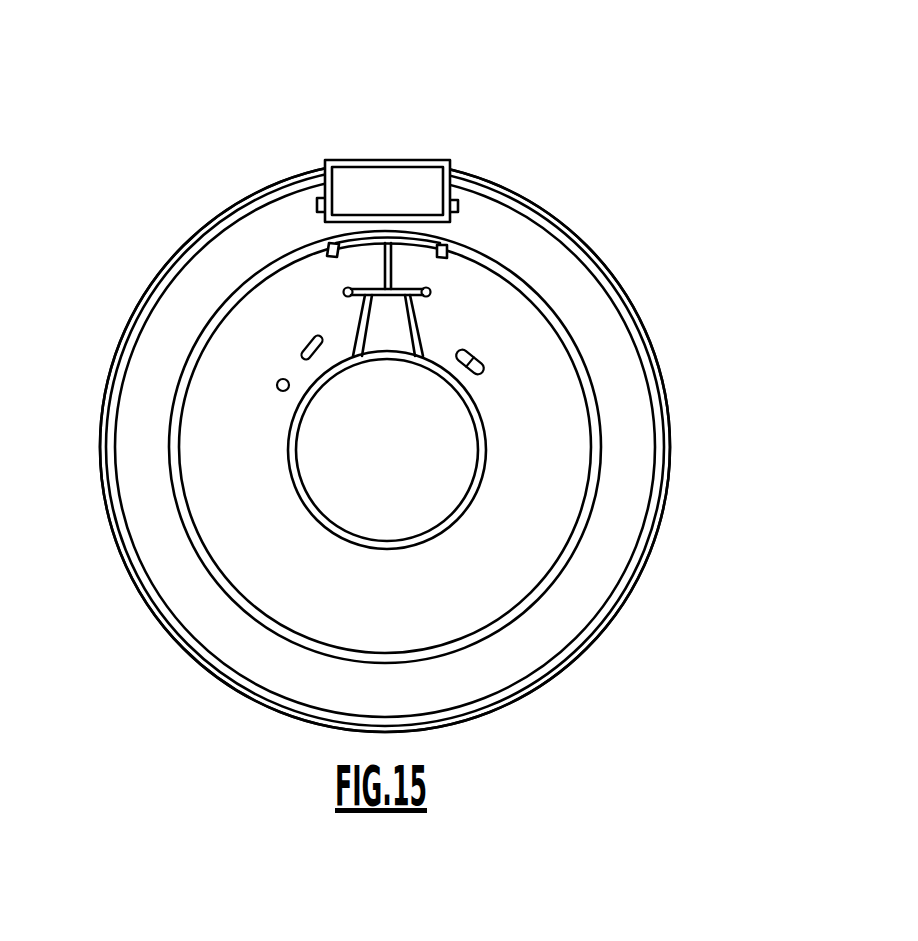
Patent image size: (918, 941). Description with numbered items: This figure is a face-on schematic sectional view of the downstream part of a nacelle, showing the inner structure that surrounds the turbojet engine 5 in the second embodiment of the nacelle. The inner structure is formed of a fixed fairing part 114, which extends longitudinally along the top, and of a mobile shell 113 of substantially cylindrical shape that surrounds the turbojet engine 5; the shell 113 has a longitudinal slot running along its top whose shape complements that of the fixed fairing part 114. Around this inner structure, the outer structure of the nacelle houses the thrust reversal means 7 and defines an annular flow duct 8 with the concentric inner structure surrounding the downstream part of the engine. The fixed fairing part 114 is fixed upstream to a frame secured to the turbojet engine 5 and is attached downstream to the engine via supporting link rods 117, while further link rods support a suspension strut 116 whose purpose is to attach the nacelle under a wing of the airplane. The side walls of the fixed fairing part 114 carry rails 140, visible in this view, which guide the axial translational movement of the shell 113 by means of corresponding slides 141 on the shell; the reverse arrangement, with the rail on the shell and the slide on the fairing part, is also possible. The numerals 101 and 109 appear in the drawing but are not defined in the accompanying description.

The turbojet engine 5 is at (333, 467).
The thrust reversal means 7 is at (150, 292).
The annular flow duct 8 is at (155, 370).
The device assembly 101 is at (628, 148).
The inner ring 109 is at (586, 333).
The mobile shell 113 is at (600, 467).
The fixed fairing part 114 is at (362, 240).
The suspension strut 116 is at (405, 178).
The supporting link rods 117 is at (420, 328).
The rails 140 is at (380, 290).
The slides 141 is at (347, 292).